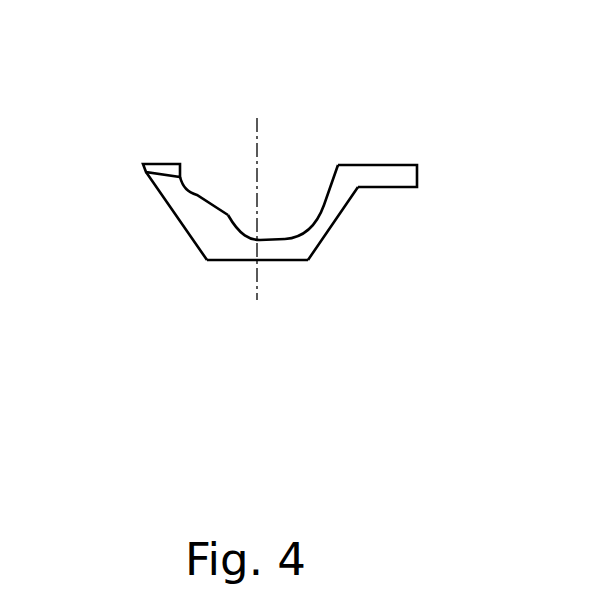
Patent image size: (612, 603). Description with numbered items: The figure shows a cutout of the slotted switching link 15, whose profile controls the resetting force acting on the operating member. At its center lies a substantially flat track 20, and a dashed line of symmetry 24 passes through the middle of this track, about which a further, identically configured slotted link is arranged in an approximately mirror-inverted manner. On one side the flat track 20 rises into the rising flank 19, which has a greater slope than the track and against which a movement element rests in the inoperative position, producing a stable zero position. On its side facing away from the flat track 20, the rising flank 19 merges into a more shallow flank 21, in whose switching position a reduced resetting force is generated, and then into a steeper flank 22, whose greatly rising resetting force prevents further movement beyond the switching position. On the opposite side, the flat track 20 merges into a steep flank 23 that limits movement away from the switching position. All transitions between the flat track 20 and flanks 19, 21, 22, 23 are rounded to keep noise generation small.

The slotted switching link 15 is at (259, 164).
The rising flank 19 is at (204, 243).
The flat track 20 is at (310, 150).
The more shallow flank 21 is at (213, 208).
The steeper flank 22 is at (180, 177).
The steep flank 23 is at (330, 200).
The line of symmetry 24 is at (257, 158).